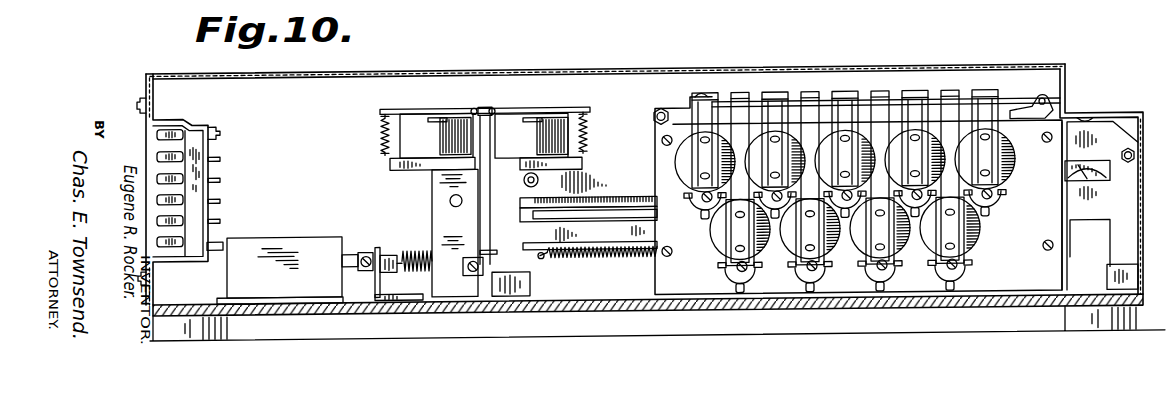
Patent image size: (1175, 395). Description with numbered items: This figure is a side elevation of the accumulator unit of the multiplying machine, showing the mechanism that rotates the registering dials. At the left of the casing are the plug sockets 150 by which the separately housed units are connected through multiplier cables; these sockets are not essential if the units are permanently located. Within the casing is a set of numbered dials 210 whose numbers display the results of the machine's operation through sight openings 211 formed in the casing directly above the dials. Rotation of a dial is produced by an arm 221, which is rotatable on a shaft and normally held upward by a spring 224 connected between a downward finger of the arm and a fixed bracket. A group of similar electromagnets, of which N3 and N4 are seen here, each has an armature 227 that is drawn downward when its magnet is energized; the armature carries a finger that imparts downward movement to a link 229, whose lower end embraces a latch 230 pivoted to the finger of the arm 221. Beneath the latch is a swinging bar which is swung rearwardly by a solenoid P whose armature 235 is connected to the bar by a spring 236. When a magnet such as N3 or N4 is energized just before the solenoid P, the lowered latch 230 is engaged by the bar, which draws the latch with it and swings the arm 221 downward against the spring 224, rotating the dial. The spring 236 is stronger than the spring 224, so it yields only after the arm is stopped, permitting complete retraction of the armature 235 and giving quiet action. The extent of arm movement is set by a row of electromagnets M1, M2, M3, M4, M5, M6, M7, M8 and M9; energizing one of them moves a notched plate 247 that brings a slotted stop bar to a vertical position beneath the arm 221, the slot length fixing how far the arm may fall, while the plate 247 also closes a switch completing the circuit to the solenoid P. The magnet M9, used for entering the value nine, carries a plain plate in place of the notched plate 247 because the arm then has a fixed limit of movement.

The plug sockets 150 is at (208, 106).
The armature 227 is at (423, 114).
The electromagnet N4 is at (436, 135).
The electromagnet N3 is at (531, 135).
The link 229 is at (490, 219).
The arm 221 is at (557, 213).
The spring 224 is at (610, 262).
The latch 230 is at (538, 264).
The armature 235 is at (356, 254).
The spring 236 is at (413, 253).
The solenoid P is at (280, 270).
The plate 247 is at (737, 106).
The sight openings 211 is at (1088, 126).
The numbered dials 210 is at (1088, 189).
The electromagnet M1 is at (960, 151).
The electromagnet M2 is at (978, 250).
The electromagnet M3 is at (890, 152).
The electromagnet M4 is at (860, 255).
The electromagnet M5 is at (825, 150).
The electromagnet M6 is at (790, 255).
The electromagnet M7 is at (752, 149).
The electromagnet M8 is at (718, 253).
The electromagnet M9 is at (675, 163).